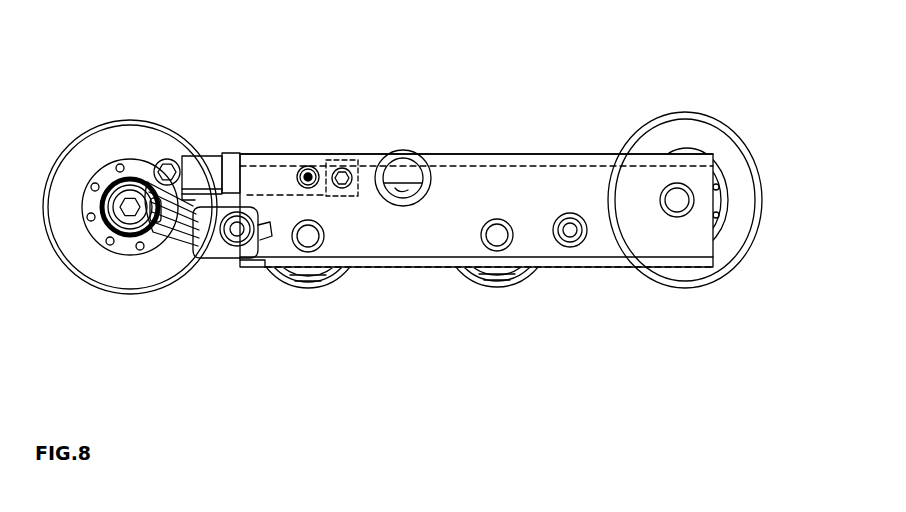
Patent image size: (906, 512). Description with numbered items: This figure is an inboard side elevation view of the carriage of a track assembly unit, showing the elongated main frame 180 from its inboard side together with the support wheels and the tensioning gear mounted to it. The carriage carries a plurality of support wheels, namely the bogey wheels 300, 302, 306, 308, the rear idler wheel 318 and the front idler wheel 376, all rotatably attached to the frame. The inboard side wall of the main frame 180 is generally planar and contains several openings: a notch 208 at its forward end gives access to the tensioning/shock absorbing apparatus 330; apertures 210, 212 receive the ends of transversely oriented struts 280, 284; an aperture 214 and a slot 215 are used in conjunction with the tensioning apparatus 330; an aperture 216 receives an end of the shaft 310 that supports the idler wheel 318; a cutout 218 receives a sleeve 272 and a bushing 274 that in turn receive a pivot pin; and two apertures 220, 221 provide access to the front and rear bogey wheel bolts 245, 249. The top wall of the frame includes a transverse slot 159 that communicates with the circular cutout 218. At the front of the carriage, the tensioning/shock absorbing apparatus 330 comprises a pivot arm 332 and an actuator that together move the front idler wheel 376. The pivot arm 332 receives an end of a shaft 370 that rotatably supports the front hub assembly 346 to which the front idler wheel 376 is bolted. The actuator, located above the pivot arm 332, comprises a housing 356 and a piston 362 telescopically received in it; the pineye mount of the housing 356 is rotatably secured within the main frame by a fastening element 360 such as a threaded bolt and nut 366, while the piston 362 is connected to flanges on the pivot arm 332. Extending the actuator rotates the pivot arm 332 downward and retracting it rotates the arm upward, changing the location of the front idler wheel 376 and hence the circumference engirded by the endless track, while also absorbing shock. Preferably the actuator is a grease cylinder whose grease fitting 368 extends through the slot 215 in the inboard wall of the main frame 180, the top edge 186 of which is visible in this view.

The transverse slot 159 is at (398, 157).
The main frame 180 is at (477, 152).
The frame top edge 186 is at (427, 152).
The notch 208 is at (232, 175).
The aperture 210 is at (237, 236).
The aperture 212 is at (567, 214).
The aperture 214 is at (353, 190).
The slot 215 is at (306, 169).
The aperture 216 is at (661, 198).
The cutout 218 is at (413, 208).
The apertures 220 is at (323, 240).
The wheel axle bolt 221 is at (508, 240).
The front bogey wheel bolt 245 is at (318, 250).
The rear bogey wheel bolt 249 is at (538, 284).
The sleeve 272 is at (402, 198).
The bushing 274 is at (413, 177).
The strut 280 is at (232, 238).
The strut 284 is at (581, 238).
The bogey wheel 300 is at (290, 287).
The bogey wheel 302 is at (522, 288).
The bogey wheel 306 is at (360, 270).
The bogey wheel 308 is at (460, 287).
The shaft 310 is at (681, 204).
The idler wheel 318 is at (720, 130).
The tensioning/shock absorbing apparatus 330 is at (227, 133).
The pivot arm 332 is at (177, 223).
The hub plate 346 is at (142, 172).
The housing 356 is at (240, 152).
The fastening element 360 is at (342, 168).
The piston 362 is at (205, 155).
The tensioner nut 366 is at (168, 159).
The grease fitting 368 is at (314, 170).
The shaft 370 is at (130, 210).
The front idler wheel 376 is at (119, 121).